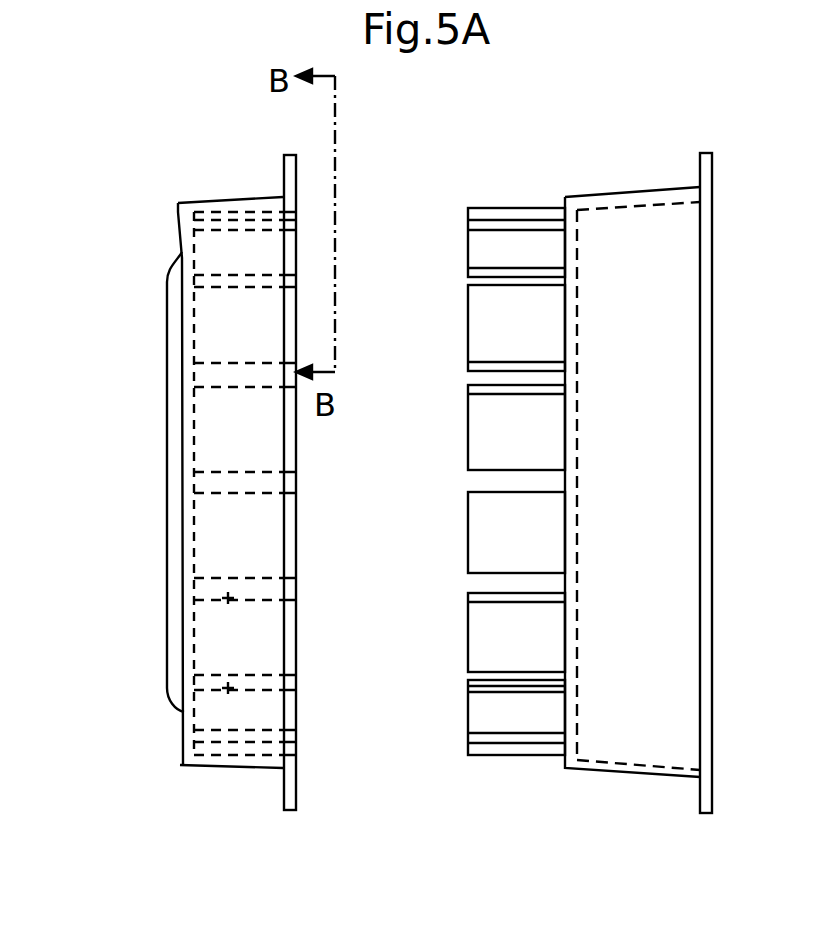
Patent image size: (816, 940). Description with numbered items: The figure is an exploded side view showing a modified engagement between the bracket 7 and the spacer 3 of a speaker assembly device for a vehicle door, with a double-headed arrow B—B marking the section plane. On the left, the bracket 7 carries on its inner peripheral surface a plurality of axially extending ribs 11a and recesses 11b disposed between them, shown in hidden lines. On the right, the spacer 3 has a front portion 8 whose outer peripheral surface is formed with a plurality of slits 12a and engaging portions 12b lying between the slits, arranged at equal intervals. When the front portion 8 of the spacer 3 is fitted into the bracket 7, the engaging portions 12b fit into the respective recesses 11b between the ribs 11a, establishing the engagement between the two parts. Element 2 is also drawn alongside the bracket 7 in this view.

The first member 2 is at (167, 442).
The spacer 3 is at (627, 784).
The bracket 7 is at (235, 770).
The front portion 8 is at (464, 489).
The ribs 11a is at (228, 600).
The recesses 11b is at (205, 535).
The slits 12a is at (497, 230).
The engaging portions 12b is at (468, 543).